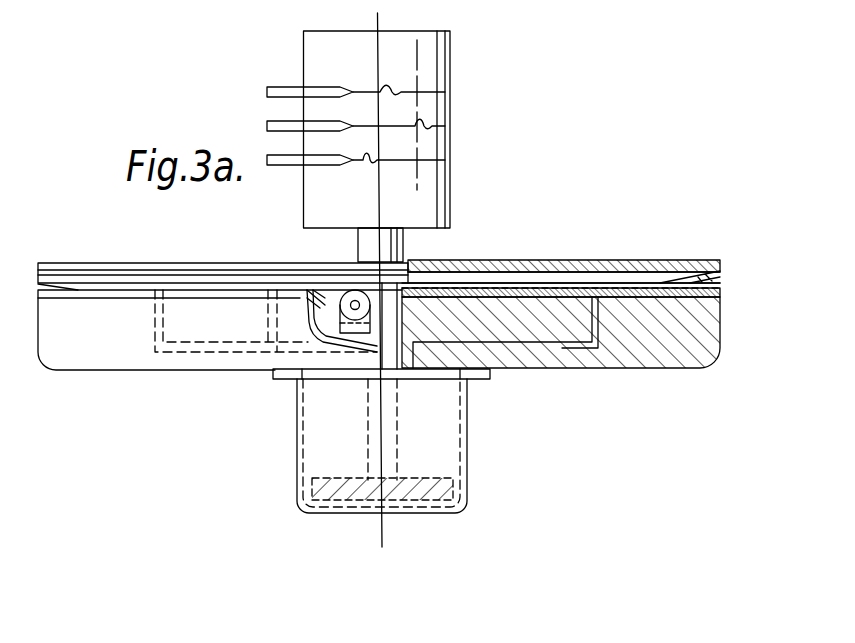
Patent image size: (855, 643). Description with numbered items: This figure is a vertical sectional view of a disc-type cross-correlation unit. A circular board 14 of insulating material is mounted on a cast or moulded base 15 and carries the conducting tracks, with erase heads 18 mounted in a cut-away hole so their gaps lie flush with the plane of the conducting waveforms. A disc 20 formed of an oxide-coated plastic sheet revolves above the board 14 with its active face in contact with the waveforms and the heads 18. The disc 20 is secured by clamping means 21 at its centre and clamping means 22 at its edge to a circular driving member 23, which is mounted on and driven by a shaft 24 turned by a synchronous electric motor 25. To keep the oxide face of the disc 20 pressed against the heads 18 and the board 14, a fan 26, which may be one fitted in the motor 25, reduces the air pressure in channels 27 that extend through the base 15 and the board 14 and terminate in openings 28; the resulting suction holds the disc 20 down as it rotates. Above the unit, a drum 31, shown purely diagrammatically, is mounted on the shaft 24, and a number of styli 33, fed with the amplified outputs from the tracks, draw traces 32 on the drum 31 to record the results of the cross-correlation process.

The circular board 14 is at (722, 288).
The base 15 is at (707, 358).
The erase heads 18 is at (340, 312).
The disc 20 is at (521, 276).
The clamping means 21 is at (427, 276).
The clamping means 22 is at (735, 259).
The circular driving member 23 is at (603, 261).
The shaft 24 is at (403, 238).
The synchronous electric motor 25 is at (467, 425).
The fan 26 is at (461, 488).
The channels 27 is at (557, 347).
The openings 28 is at (593, 290).
The drum 31 is at (433, 61).
The trace 32 is at (437, 95).
The styli 33 is at (267, 157).